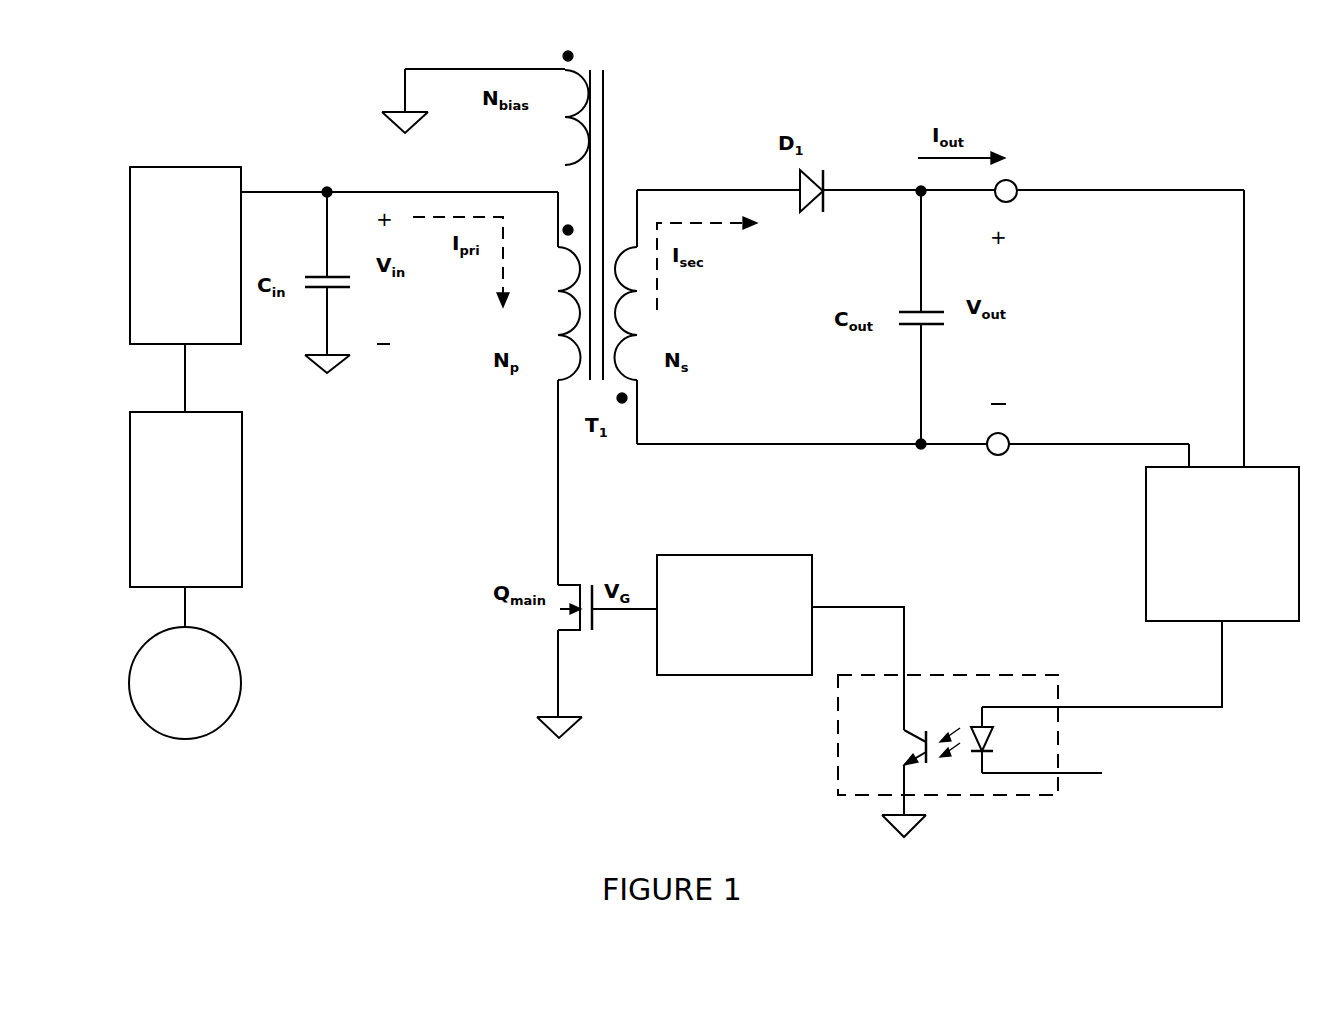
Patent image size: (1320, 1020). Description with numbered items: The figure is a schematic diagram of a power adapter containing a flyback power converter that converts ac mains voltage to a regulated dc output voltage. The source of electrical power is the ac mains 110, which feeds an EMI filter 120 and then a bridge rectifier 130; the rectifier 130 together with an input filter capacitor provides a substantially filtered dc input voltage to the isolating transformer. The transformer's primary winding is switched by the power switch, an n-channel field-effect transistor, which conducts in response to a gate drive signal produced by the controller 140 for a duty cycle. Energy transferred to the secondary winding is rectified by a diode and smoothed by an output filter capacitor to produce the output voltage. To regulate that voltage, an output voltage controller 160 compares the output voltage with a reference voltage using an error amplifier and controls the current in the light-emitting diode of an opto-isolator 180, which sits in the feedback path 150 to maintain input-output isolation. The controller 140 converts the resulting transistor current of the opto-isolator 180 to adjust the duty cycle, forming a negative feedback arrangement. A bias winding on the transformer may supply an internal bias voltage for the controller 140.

The ac mains 110 is at (169, 717).
The EMI filter 120 is at (168, 557).
The bridge rectifier 130 is at (168, 298).
The controller 140 is at (760, 665).
The feedback path 150 is at (1102, 664).
The output voltage controller 160 is at (1248, 601).
The opto-isolator 180 is at (858, 710).